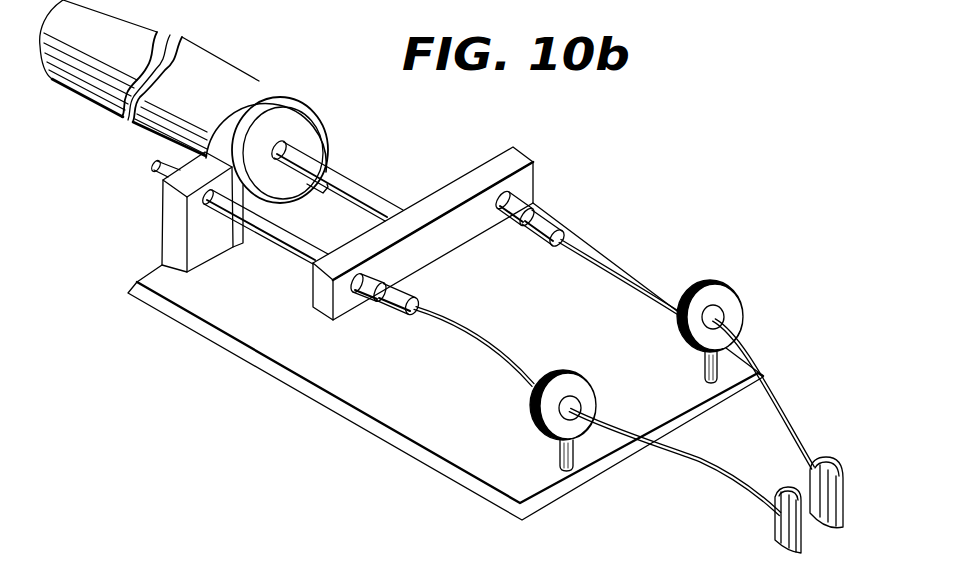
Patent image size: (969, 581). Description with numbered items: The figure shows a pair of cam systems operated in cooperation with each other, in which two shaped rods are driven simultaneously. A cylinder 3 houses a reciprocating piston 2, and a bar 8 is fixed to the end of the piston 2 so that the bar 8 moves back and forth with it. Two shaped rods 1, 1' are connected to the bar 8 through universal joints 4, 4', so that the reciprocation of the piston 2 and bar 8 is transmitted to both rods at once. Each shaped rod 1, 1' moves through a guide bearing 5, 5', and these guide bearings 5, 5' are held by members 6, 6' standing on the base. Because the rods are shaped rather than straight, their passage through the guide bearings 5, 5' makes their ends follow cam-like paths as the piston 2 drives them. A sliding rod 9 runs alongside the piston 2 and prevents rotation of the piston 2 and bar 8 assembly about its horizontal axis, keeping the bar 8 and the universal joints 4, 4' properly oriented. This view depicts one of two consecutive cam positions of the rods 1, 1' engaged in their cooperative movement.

The shaped rod 1 is at (686, 355).
The shaped rod 1' is at (597, 411).
The piston 2 is at (327, 171).
The cylinder 3 is at (196, 41).
The universal joint 4 is at (539, 217).
The universal joint 4' is at (396, 294).
The guide bearing 5 is at (738, 334).
The guide bearing 5' is at (592, 424).
The member 6 is at (713, 300).
The member 6' is at (563, 392).
The bar 8 is at (533, 157).
The sliding rod 9 is at (155, 169).